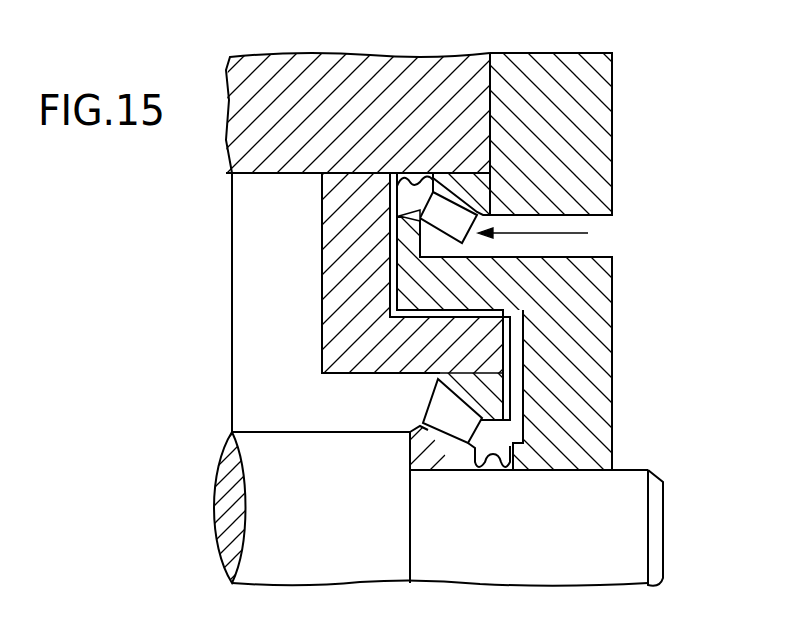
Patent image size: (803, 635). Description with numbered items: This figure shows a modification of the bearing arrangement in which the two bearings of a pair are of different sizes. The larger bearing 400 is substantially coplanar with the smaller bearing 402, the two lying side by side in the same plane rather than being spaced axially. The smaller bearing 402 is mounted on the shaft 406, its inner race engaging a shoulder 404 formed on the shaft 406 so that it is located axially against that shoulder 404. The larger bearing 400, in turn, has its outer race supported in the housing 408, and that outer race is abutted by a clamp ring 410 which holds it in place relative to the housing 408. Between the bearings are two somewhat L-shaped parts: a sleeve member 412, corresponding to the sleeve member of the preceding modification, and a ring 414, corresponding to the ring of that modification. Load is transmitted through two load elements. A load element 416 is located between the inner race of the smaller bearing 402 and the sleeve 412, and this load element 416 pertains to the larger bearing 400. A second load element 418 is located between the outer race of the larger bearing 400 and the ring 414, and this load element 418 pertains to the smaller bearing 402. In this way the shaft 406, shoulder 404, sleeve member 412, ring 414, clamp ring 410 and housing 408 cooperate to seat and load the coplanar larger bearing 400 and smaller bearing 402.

The larger bearing 400 is at (565, 240).
The smaller bearing 402 is at (427, 405).
The shoulder 404 is at (410, 523).
The shaft 406 is at (637, 494).
The housing 408 is at (419, 68).
The clamp ring 410 is at (603, 157).
The sleeve member 412 is at (603, 347).
The ring 414 is at (330, 297).
The load element 416 is at (500, 470).
The load element 418 is at (403, 198).